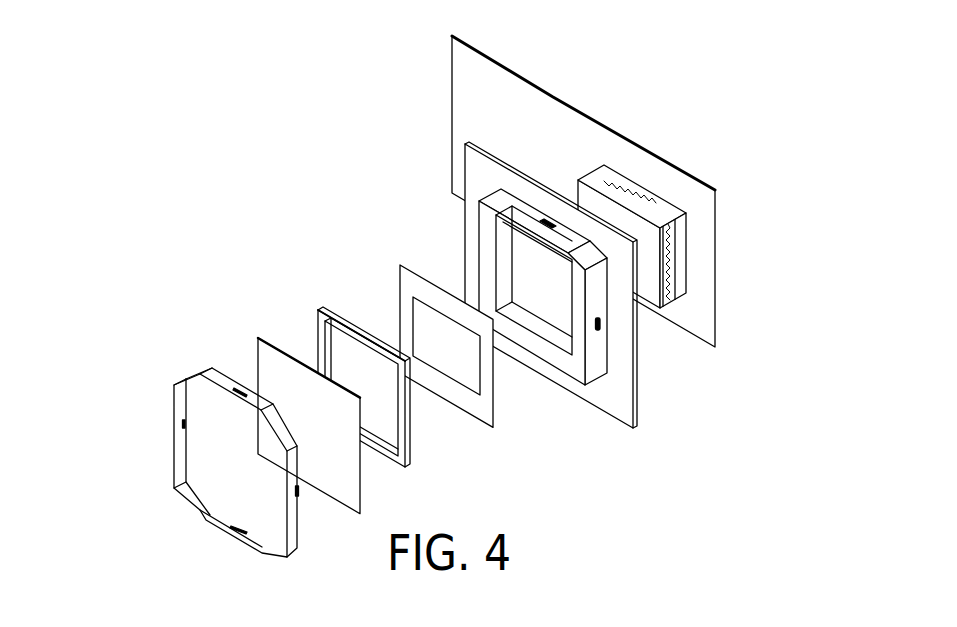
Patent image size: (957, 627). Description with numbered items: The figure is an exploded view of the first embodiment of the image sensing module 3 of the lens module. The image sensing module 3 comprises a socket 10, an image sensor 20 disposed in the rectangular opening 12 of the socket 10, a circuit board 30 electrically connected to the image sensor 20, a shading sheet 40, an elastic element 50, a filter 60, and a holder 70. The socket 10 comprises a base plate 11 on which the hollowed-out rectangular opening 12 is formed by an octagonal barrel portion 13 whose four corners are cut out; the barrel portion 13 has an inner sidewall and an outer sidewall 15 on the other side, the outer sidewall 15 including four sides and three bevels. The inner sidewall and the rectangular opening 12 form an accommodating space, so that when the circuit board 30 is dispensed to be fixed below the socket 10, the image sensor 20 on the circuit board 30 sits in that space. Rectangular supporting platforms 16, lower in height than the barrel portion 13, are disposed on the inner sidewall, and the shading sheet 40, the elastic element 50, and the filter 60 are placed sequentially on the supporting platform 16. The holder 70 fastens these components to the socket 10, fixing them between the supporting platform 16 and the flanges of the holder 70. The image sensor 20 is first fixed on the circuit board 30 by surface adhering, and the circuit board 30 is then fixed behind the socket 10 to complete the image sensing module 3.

The image sensing module 3 is at (69, 33).
The socket 10 is at (636, 422).
The base plate 11 is at (532, 322).
The rectangular opening 12 is at (537, 307).
The barrel portion 13 is at (493, 257).
The outer sidewall 15 is at (600, 326).
The supporting platform 16 is at (500, 293).
The image sensor 20 is at (617, 217).
The circuit board 30 is at (715, 305).
The shading sheet 40 is at (400, 287).
The elastic element 50 is at (318, 330).
The filter 60 is at (258, 365).
The holder 70 is at (174, 453).